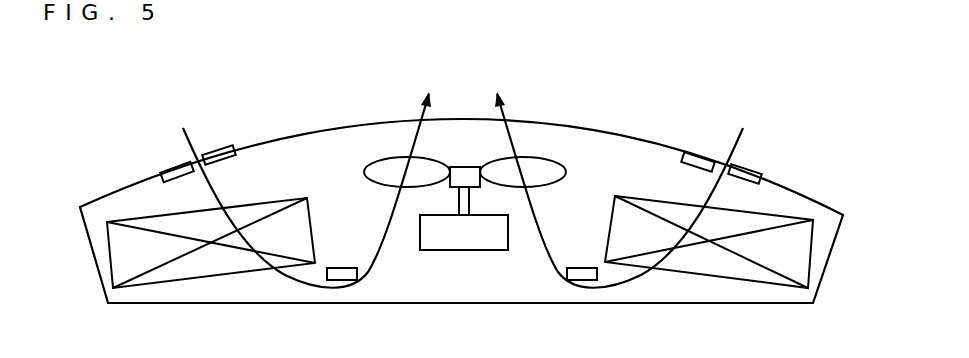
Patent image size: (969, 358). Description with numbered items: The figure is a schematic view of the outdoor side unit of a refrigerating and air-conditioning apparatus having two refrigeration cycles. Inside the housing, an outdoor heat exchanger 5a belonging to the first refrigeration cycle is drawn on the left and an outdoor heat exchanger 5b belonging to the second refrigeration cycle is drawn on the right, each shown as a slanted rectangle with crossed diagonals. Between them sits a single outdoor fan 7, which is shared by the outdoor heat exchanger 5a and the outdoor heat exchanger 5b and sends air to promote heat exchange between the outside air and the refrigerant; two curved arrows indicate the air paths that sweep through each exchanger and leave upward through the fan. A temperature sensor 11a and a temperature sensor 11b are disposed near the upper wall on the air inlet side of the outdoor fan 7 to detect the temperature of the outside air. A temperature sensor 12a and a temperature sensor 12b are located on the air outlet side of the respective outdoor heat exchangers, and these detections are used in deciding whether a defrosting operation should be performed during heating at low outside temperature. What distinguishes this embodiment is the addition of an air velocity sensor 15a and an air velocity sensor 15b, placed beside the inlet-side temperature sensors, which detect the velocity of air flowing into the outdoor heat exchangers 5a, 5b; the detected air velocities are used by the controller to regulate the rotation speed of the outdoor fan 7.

The outdoor heat exchanger 5a is at (160, 273).
The outdoor heat exchanger 5b is at (760, 270).
The outdoor fan 7 is at (444, 248).
The temperature sensor 11a is at (170, 166).
The temperature sensor 11b is at (747, 165).
The temperature sensor 12a is at (333, 280).
The temperature sensor 12b is at (573, 280).
The air velocity sensor 15a is at (230, 147).
The air velocity sensor 15b is at (700, 153).